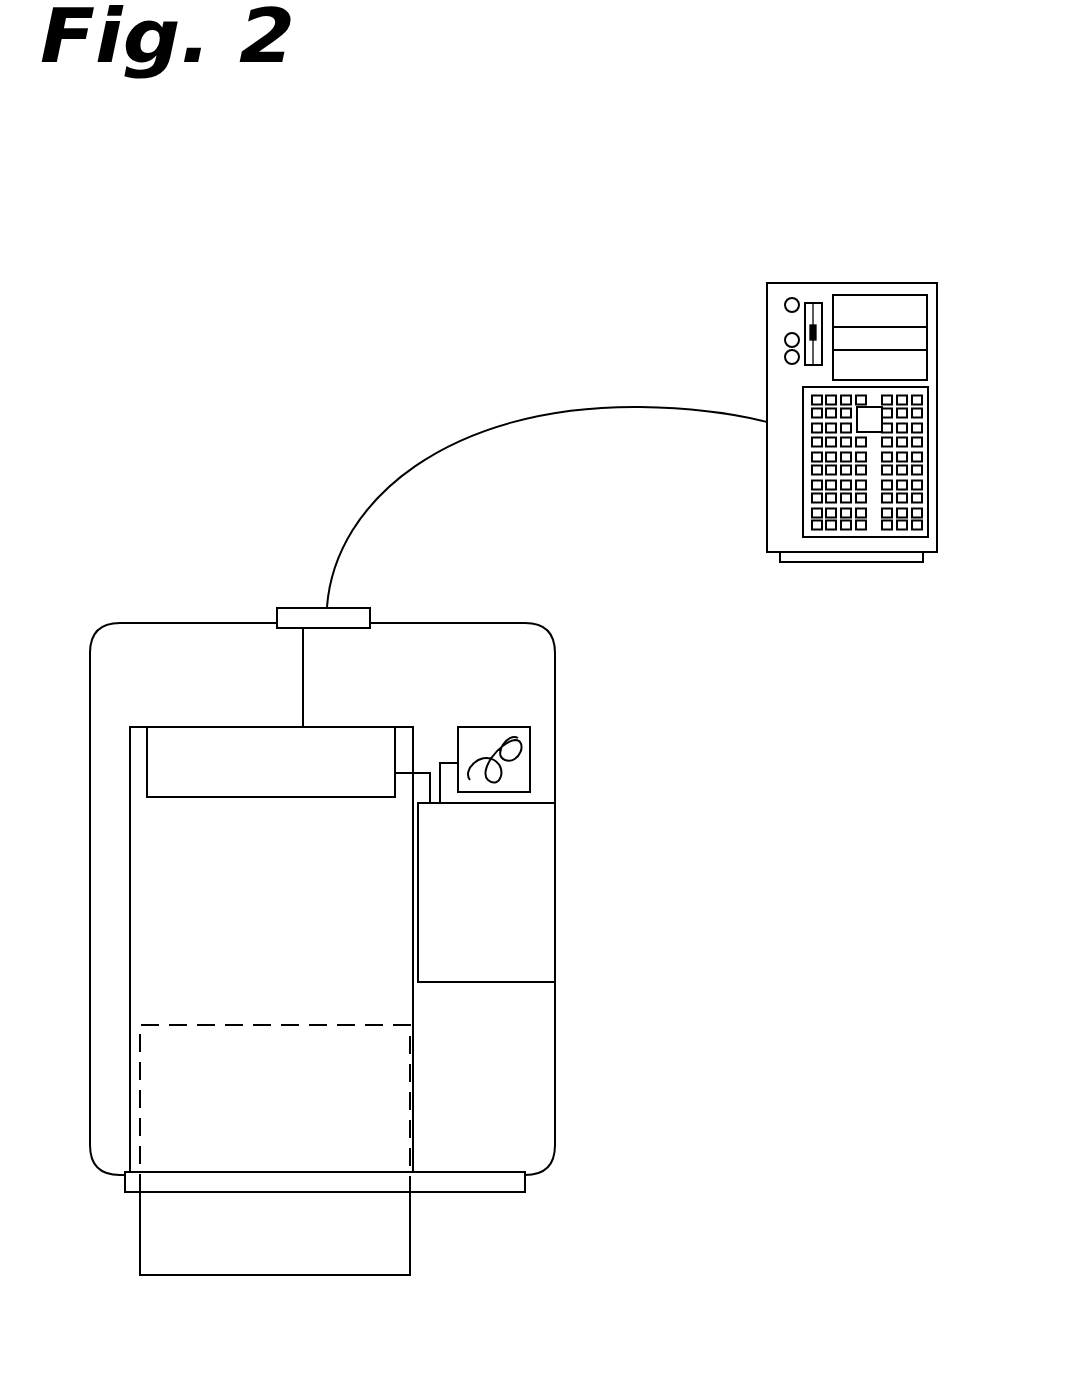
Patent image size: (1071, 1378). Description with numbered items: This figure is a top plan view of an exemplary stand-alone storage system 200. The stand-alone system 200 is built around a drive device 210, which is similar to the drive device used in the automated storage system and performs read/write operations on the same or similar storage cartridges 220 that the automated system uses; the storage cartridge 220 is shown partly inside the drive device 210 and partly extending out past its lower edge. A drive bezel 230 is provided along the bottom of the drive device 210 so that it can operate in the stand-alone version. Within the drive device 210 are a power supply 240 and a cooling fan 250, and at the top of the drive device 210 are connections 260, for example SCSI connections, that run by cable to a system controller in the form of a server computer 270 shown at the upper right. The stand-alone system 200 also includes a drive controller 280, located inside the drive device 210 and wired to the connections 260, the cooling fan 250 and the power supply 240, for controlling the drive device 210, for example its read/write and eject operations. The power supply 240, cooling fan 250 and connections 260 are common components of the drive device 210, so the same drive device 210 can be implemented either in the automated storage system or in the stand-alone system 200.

The stand-alone storage system 200 is at (254, 438).
The drive device 210 is at (555, 1063).
The storage cartridge 220 is at (262, 1275).
The drive bezel 230 is at (473, 1192).
The power supply 240 is at (482, 982).
The cooling fan 250 is at (490, 727).
The connections 260 is at (345, 607).
The server computer 270 is at (853, 283).
The drive controller 280 is at (213, 797).